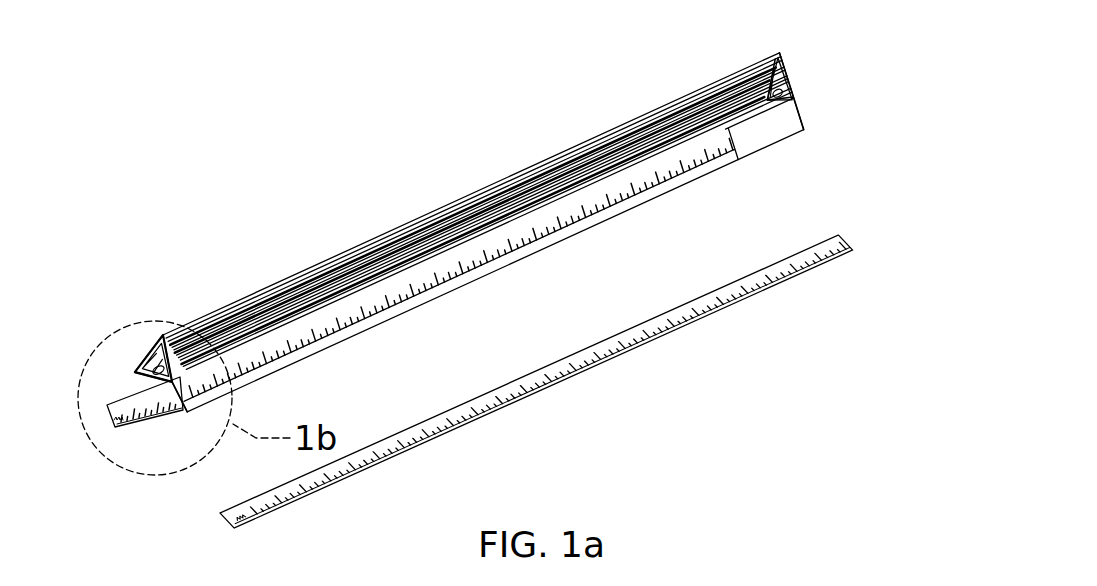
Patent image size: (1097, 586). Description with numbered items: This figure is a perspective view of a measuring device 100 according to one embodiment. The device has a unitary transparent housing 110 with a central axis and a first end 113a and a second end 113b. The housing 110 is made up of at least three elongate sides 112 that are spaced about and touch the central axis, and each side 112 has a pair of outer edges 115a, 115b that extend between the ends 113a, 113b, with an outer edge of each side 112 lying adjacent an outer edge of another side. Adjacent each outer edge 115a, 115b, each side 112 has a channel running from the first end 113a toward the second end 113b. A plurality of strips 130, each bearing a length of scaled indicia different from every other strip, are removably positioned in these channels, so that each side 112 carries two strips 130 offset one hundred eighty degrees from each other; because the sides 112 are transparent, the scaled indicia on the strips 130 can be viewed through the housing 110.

The measuring device 100 is at (249, 131).
The housing 110 is at (554, 150).
The elongate side 112 is at (804, 98).
The first end 113a is at (162, 306).
The second end 113b is at (755, 47).
The outer edge 115a is at (418, 302).
The outer edge 115b is at (392, 233).
The strip 130 is at (129, 448).